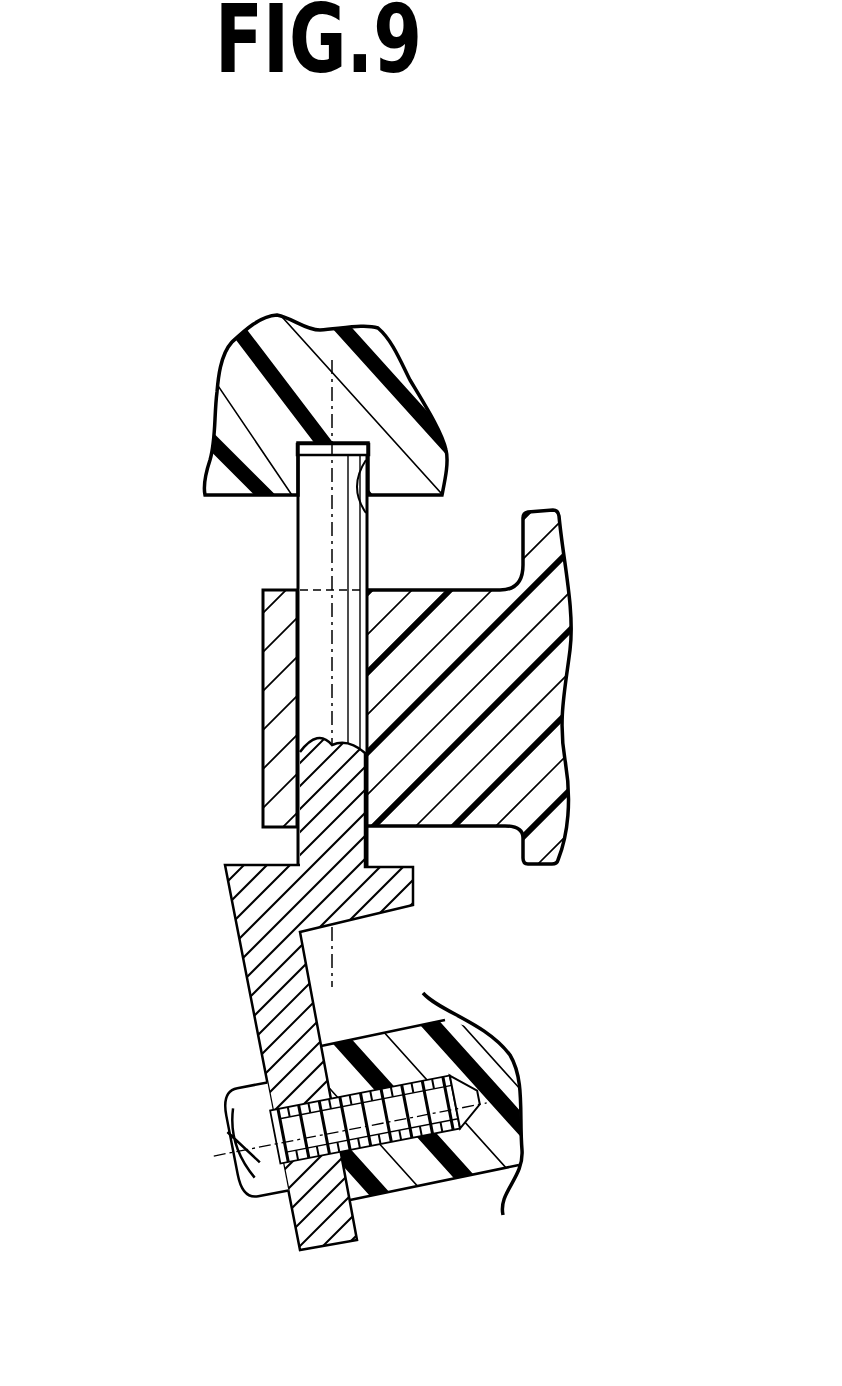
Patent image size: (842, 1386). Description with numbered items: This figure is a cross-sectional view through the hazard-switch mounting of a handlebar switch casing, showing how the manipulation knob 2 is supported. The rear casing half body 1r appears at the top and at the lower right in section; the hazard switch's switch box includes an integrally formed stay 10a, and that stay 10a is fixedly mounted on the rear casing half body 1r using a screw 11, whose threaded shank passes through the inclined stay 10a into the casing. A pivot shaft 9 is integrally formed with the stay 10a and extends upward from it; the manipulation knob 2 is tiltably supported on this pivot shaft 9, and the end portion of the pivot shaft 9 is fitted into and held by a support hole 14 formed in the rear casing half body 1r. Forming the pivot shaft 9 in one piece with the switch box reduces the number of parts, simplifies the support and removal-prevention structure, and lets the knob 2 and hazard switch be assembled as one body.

The rear casing half body 1r is at (312, 328).
The manipulation knob 2 is at (508, 720).
The pivot shaft 9 is at (312, 540).
The support hole 14 is at (355, 500).
The stay 10a is at (262, 1000).
The screw 11 is at (230, 1175).